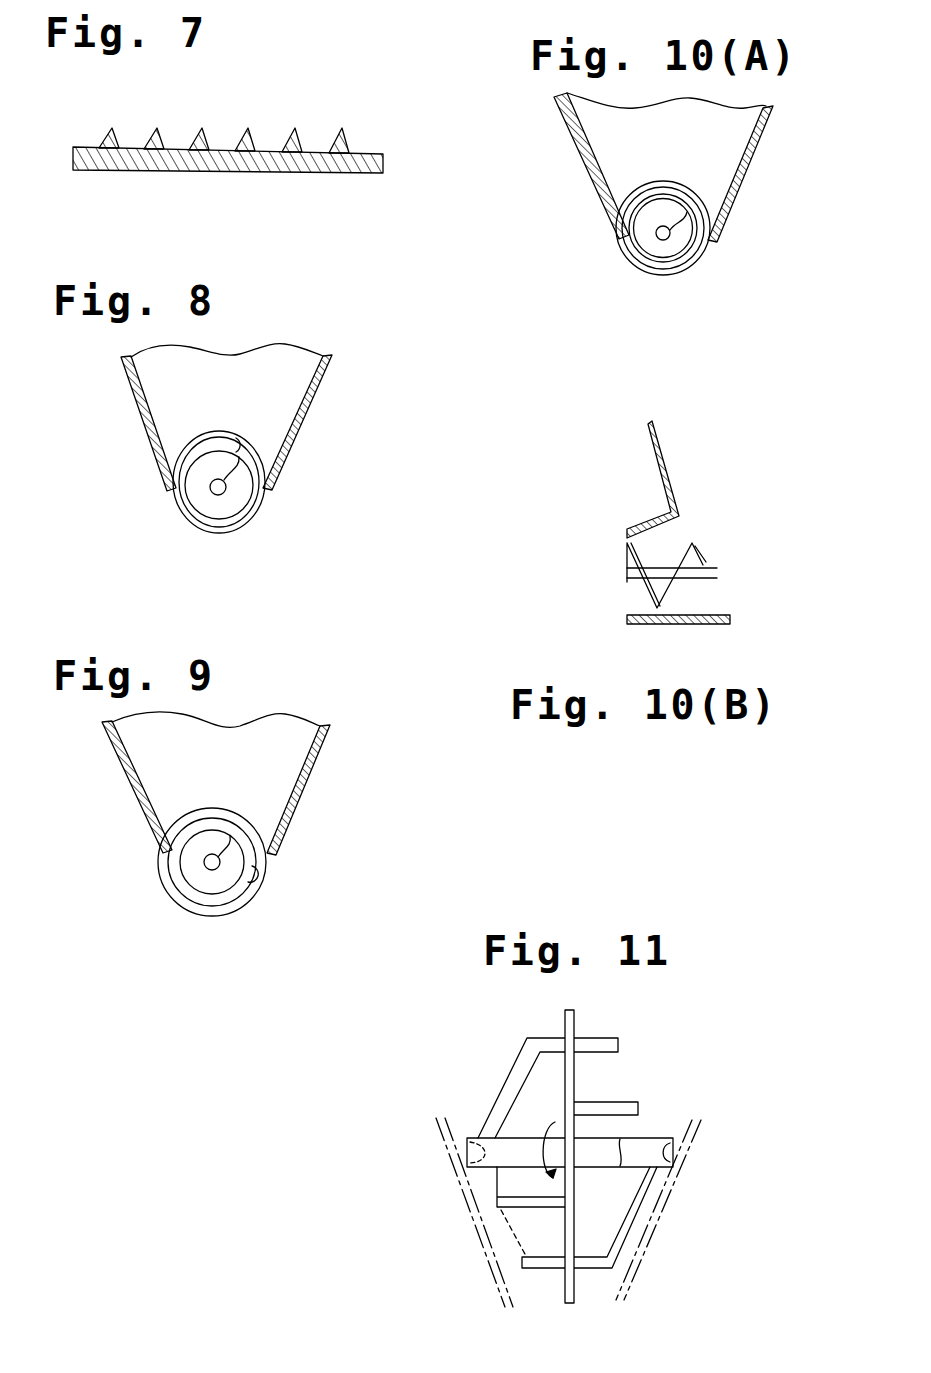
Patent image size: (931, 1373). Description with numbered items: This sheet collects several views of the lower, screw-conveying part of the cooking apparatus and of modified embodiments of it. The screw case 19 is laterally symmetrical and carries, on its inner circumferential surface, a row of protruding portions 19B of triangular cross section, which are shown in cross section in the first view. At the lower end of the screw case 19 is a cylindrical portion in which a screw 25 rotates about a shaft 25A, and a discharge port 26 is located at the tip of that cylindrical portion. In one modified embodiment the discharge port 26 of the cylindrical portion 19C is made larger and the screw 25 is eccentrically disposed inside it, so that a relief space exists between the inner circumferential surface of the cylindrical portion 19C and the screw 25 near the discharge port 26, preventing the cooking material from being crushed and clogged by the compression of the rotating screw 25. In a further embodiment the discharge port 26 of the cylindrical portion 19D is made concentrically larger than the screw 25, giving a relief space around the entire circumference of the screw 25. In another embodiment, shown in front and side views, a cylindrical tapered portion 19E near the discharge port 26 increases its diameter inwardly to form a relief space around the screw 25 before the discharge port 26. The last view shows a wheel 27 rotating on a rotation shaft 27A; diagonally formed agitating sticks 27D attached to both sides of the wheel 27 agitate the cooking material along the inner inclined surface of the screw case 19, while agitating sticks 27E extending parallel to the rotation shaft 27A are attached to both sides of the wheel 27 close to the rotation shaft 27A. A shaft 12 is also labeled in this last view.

In FIG. 11, the shaft 12 is at (576, 1294).
In FIG. 7, the screw case 19 is at (199, 172).
In FIG. 8, the screw case 19 is at (288, 443).
In FIG. 9, the screw case 19 is at (298, 795).
In FIG. 10A, the screw case 19 is at (743, 173).
In FIG. 11, the screw case 19 is at (683, 1145).
In FIG. 7, the protruding portions 19B is at (113, 129).
In FIG. 8, the cylindrical portion 19C is at (174, 440).
In FIG. 9, the cylindrical portion 19D is at (183, 825).
In FIG. 10A, the cylindrical tapered portion 19E is at (612, 182).
In FIG. 10B, the cylindrical tapered portion 19E is at (661, 518).
In FIG. 8, the screw 25 is at (230, 505).
In FIG. 9, the screw 25 is at (227, 878).
In FIG. 10A, the screw 25 is at (687, 247).
In FIG. 10B, the screw 25 is at (643, 588).
In FIG. 8, the shaft 25A is at (208, 492).
In FIG. 9, the shaft 25A is at (208, 870).
In FIG. 10A, the shaft 25A is at (660, 240).
In FIG. 10B, the shaft 25A is at (705, 580).
In FIG. 8, the discharge port 26 is at (238, 442).
In FIG. 9, the discharge port 26 is at (250, 880).
In FIG. 10B, the discharge port 26 is at (630, 604).
In FIG. 11, the wheel 27 is at (575, 1013).
In FIG. 11, the rotation shaft 27A is at (512, 1158).
In FIG. 11, the agitating sticks 27D is at (512, 1082).
In FIG. 11, the agitating sticks 27E is at (622, 1102).